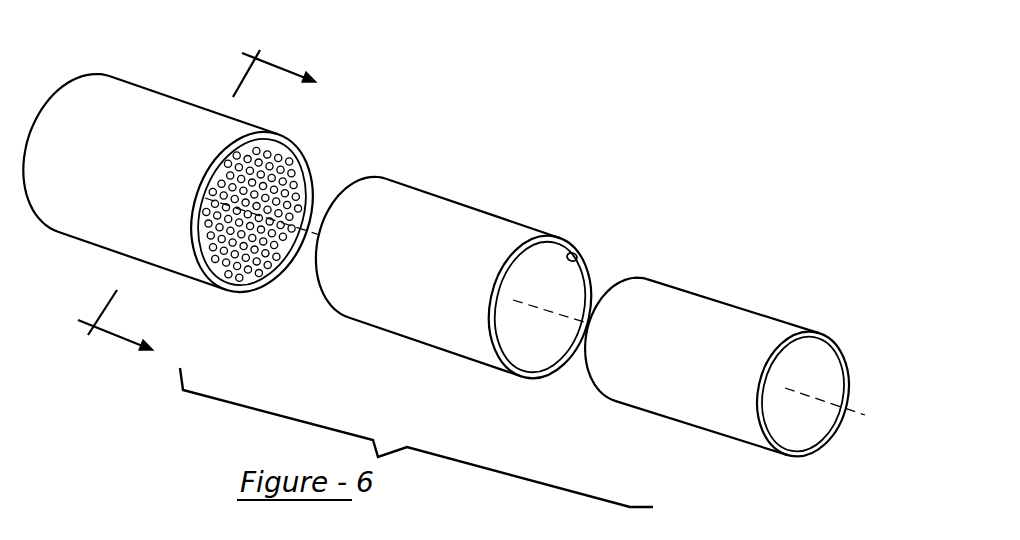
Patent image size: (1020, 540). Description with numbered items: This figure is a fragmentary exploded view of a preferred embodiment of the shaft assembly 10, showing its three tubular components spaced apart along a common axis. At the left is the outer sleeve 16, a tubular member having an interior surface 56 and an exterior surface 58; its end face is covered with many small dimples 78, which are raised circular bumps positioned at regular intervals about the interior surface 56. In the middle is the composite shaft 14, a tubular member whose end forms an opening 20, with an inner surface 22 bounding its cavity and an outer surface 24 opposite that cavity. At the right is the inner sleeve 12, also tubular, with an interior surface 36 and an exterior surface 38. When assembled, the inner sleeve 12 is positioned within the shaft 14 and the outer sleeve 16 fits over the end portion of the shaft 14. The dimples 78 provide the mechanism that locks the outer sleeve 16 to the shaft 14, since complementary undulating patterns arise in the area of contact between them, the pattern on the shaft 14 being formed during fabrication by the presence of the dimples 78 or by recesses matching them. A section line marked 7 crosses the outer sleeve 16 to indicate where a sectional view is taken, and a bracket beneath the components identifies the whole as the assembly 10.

The assembly 10 is at (416, 437).
The inner sleeve 12 is at (720, 307).
The composite shaft 14 is at (452, 210).
The outer sleeve 16 is at (102, 93).
The opening 20 is at (588, 258).
The inner surface 22 is at (562, 295).
The outer surface 24 is at (464, 267).
The interior surface 36 is at (832, 381).
The exterior surface 38 is at (752, 362).
The interior surface 56 is at (283, 177).
The exterior surface 58 is at (178, 187).
The dimples 78 is at (258, 265).
The section line 7- 7 is at (178, 200).